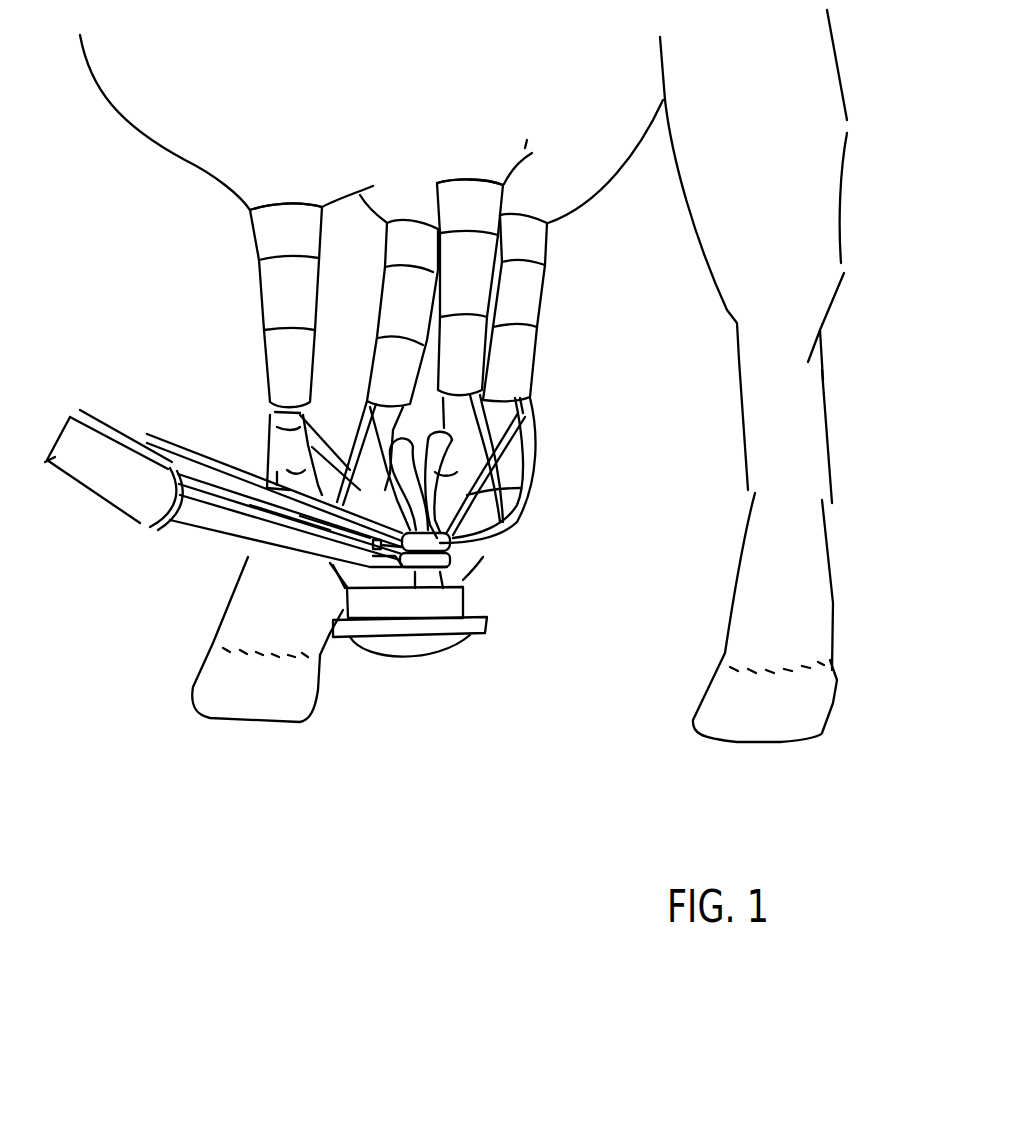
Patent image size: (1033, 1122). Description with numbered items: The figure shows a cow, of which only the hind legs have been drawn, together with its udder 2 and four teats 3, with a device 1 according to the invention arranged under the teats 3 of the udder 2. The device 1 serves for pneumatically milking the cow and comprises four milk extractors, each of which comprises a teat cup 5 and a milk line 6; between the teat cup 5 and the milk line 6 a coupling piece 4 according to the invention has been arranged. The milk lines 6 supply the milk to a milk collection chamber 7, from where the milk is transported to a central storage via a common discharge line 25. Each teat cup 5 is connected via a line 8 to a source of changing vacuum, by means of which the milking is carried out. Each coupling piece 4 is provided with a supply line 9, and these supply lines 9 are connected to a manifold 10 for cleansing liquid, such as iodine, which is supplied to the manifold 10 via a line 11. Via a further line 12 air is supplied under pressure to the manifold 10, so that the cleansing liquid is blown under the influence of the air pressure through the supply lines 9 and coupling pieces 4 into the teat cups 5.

The device 1 is at (572, 437).
The udder 2 is at (187, 130).
The teats 3 is at (390, 188).
The coupling piece 4 is at (290, 413).
The teat cup 5 is at (287, 300).
The milk line 6 is at (280, 450).
The milk collection chamber 7 is at (407, 607).
The line 8 is at (265, 460).
The supply line 9 is at (287, 462).
The manifold 10 is at (453, 543).
The line 11 is at (170, 437).
The line 12 is at (112, 415).
The common discharge line 25 is at (205, 533).